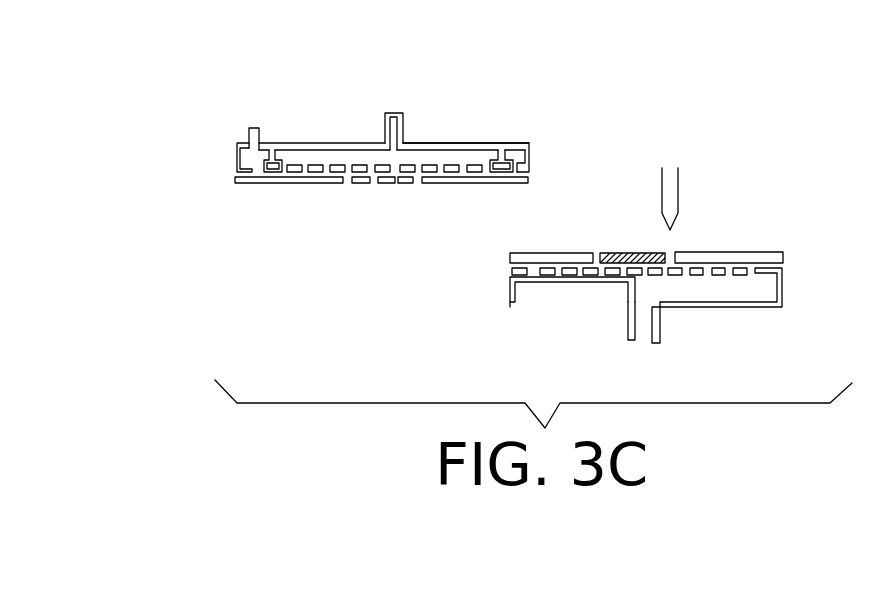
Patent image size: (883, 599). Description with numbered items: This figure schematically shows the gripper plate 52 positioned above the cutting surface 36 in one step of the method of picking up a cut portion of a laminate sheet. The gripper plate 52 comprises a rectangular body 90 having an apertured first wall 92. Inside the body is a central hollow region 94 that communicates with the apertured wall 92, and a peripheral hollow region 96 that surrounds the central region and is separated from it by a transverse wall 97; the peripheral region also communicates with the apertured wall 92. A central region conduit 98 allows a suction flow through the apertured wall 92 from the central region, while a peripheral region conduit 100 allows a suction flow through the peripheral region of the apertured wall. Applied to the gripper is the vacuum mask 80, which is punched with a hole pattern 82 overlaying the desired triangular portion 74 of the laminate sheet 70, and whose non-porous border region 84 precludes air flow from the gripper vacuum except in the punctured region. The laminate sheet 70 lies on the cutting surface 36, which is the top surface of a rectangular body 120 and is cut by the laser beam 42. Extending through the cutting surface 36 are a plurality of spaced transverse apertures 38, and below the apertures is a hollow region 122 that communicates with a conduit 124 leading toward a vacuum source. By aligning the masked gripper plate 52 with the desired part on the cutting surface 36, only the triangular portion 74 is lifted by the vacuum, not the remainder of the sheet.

The rectangular body 90 is at (228, 147).
The peripheral region conduit 100 is at (255, 128).
The central hollow region 94 is at (431, 158).
The central region conduit 98 is at (392, 113).
The transverse wall 97 is at (275, 153).
The gripper plate 52 is at (516, 140).
The peripheral hollow region 96 is at (513, 160).
The vacuum mask 80 is at (334, 209).
The apertured first wall 92 is at (323, 178).
The hole pattern 82 is at (375, 183).
The non-porous border region 84 is at (455, 183).
The cutting surface 36 is at (592, 253).
The triangular portion 74 is at (642, 252).
The laminate sheet 70 is at (748, 247).
The beam 42 is at (668, 190).
The rectangular body 120 is at (694, 329).
The spaced transverse apertures 38 is at (623, 307).
The conduit 124 is at (627, 337).
The hollow region 122 is at (703, 290).